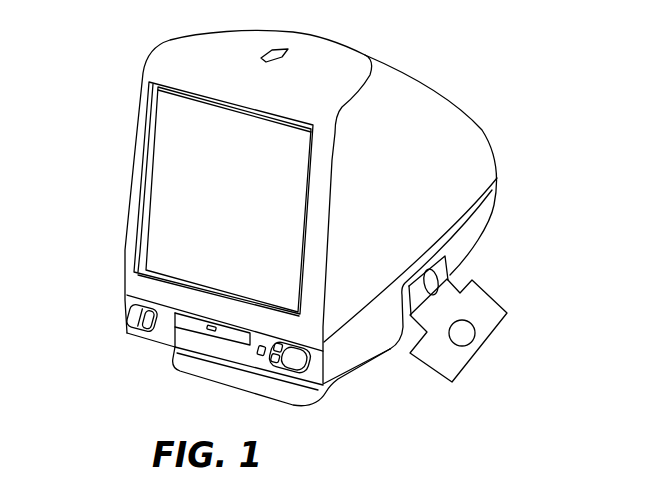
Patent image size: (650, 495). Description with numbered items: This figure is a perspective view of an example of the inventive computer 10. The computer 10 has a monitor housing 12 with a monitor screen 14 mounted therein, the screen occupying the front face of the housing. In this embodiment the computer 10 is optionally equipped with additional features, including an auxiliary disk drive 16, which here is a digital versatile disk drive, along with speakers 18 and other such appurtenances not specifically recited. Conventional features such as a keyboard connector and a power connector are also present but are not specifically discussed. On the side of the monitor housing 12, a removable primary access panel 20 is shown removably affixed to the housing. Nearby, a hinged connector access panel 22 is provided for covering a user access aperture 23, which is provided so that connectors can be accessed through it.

The computer 10 is at (123, 75).
The monitor housing 12 is at (443, 174).
The monitor screen 14 is at (263, 191).
The auxiliary disk drive 16 is at (185, 322).
The speakers 18 is at (127, 322).
The removable primary access panel 20 is at (473, 236).
The hinged connector access panel 22 is at (492, 330).
The user access aperture 23 is at (446, 280).